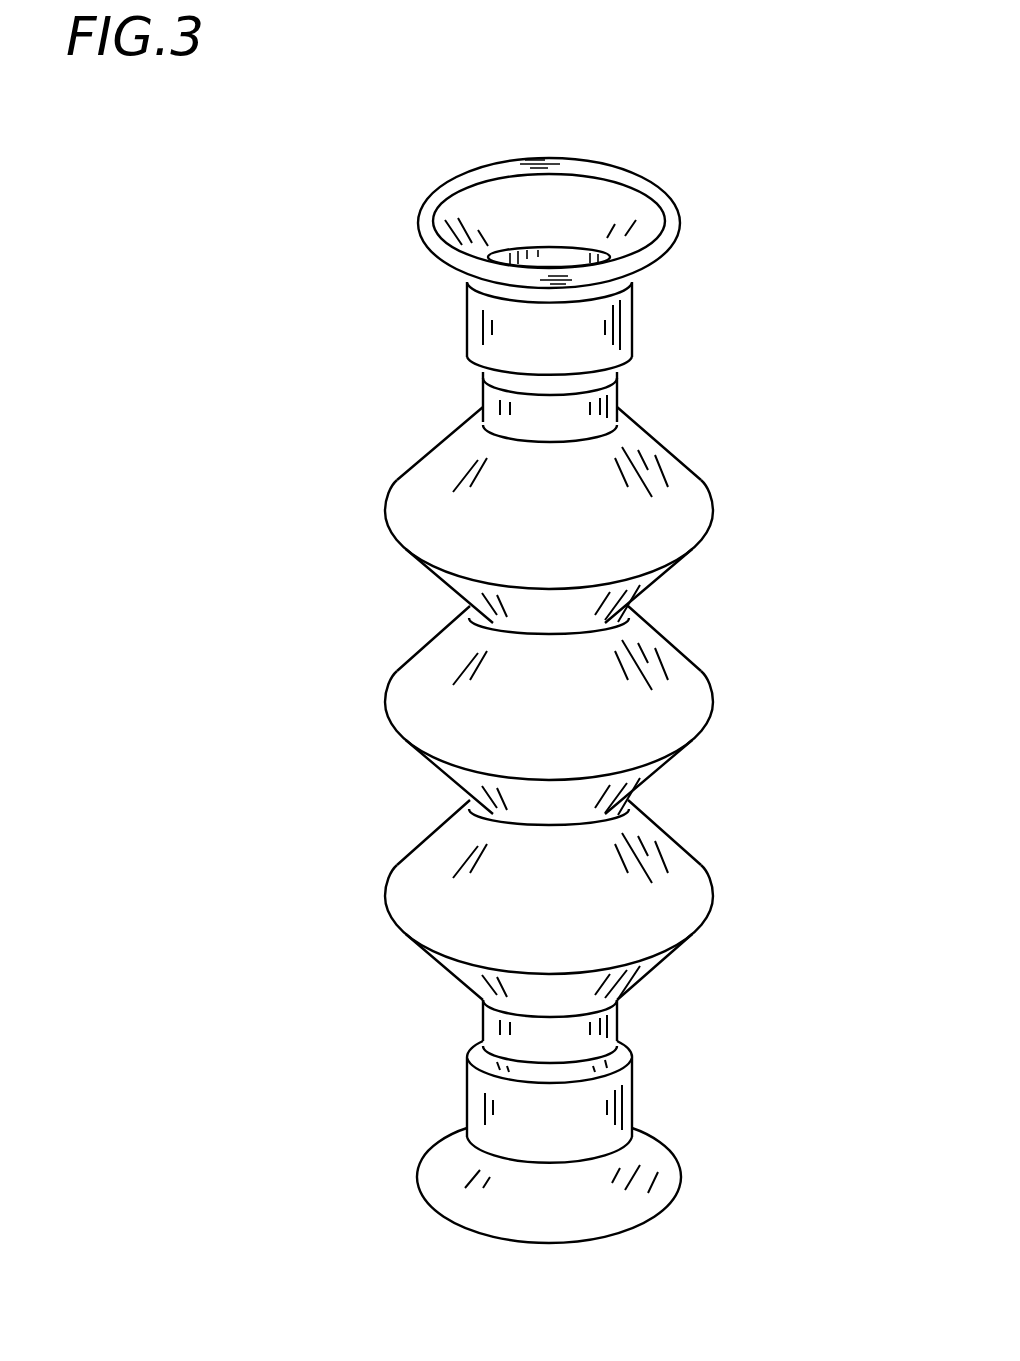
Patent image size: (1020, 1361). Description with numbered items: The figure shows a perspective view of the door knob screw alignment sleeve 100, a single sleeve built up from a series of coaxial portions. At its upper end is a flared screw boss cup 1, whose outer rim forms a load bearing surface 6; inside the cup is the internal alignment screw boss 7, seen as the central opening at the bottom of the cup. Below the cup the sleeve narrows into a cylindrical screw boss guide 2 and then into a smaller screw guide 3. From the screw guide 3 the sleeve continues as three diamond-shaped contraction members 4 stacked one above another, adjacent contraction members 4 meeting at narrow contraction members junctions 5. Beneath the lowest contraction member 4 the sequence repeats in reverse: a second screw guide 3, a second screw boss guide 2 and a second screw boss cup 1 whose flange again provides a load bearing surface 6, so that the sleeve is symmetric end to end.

The door knob screw alignment sleeve 100 is at (650, 152).
The screw boss cup 1 is at (420, 222).
The screw boss guide 2 is at (472, 318).
The screw guide 3 is at (488, 402).
The contraction members 4 is at (390, 507).
The contraction members junctions 5 is at (467, 617).
The load bearing surfaces 6 is at (677, 235).
The internal alignment screw boss 7 is at (560, 255).